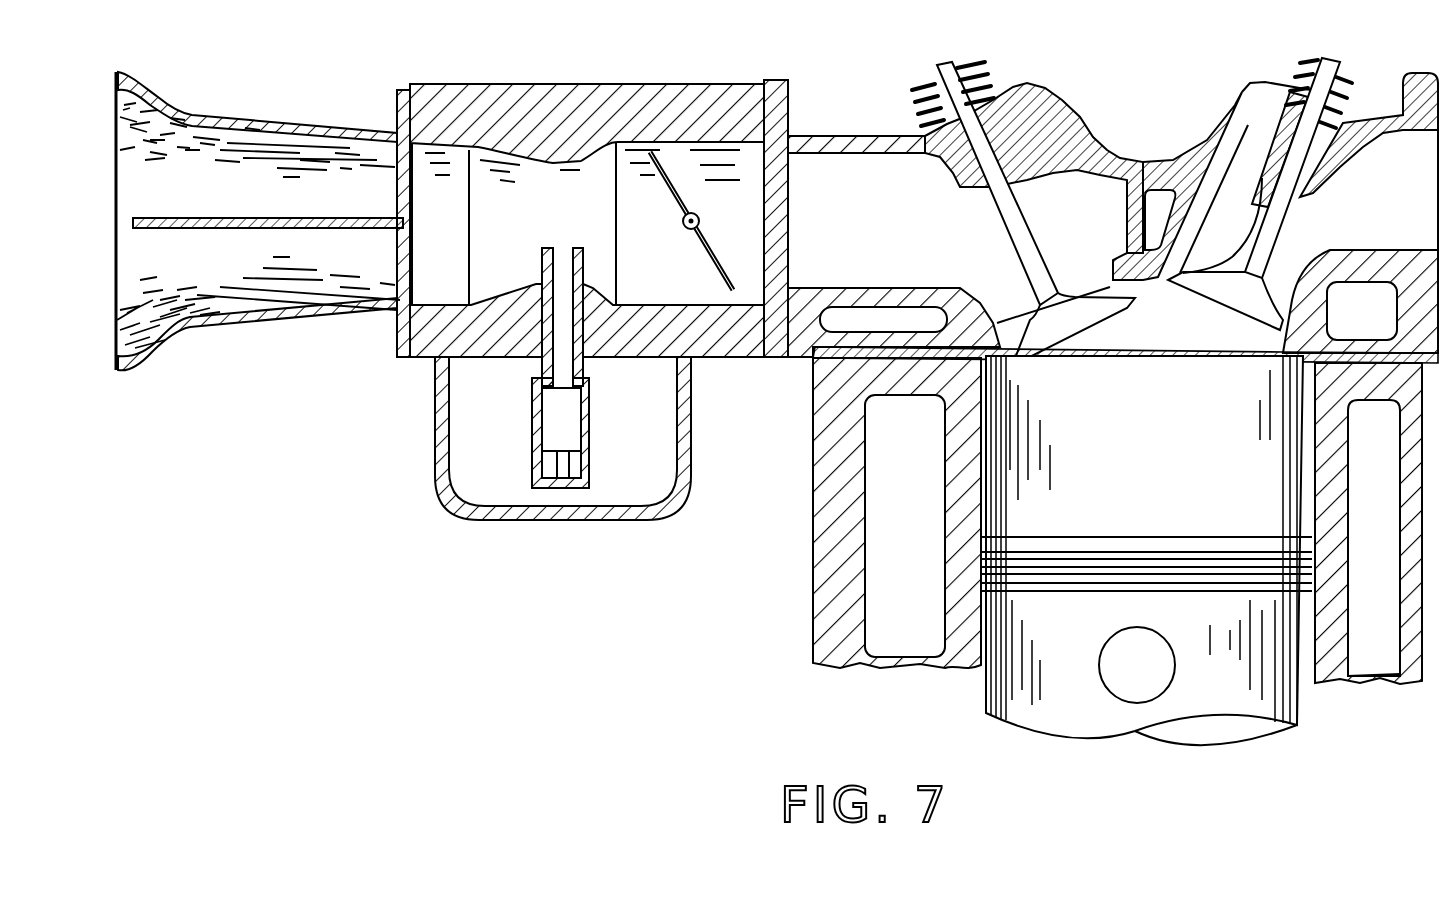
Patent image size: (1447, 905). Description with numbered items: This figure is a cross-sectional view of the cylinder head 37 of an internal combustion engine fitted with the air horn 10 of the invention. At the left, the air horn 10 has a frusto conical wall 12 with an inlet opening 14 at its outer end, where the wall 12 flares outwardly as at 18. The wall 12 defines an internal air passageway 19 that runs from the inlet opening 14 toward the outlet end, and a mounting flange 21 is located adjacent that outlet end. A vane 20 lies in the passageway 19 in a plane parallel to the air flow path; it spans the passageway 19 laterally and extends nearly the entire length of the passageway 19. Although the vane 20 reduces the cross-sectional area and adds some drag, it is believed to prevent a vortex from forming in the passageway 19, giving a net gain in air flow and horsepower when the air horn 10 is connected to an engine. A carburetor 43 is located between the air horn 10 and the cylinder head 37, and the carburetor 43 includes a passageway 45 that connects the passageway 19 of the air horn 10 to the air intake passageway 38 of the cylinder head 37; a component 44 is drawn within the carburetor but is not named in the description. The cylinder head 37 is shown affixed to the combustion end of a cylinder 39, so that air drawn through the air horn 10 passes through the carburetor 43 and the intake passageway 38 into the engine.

The air horn 10 is at (309, 55).
The frusto conical wall 12 is at (272, 120).
The inlet opening 14 is at (113, 180).
The outward flare 18 is at (143, 92).
The internal air passageway 19 is at (220, 287).
The vane 20 is at (348, 220).
The mounting flange 21 is at (397, 348).
The cylinder head 37 is at (828, 132).
The air intake passageway 38 is at (830, 268).
The cylinder 39 is at (822, 558).
The carburetor 43 is at (571, 101).
The throttle plate 44 is at (764, 162).
The passageway 45 is at (483, 158).